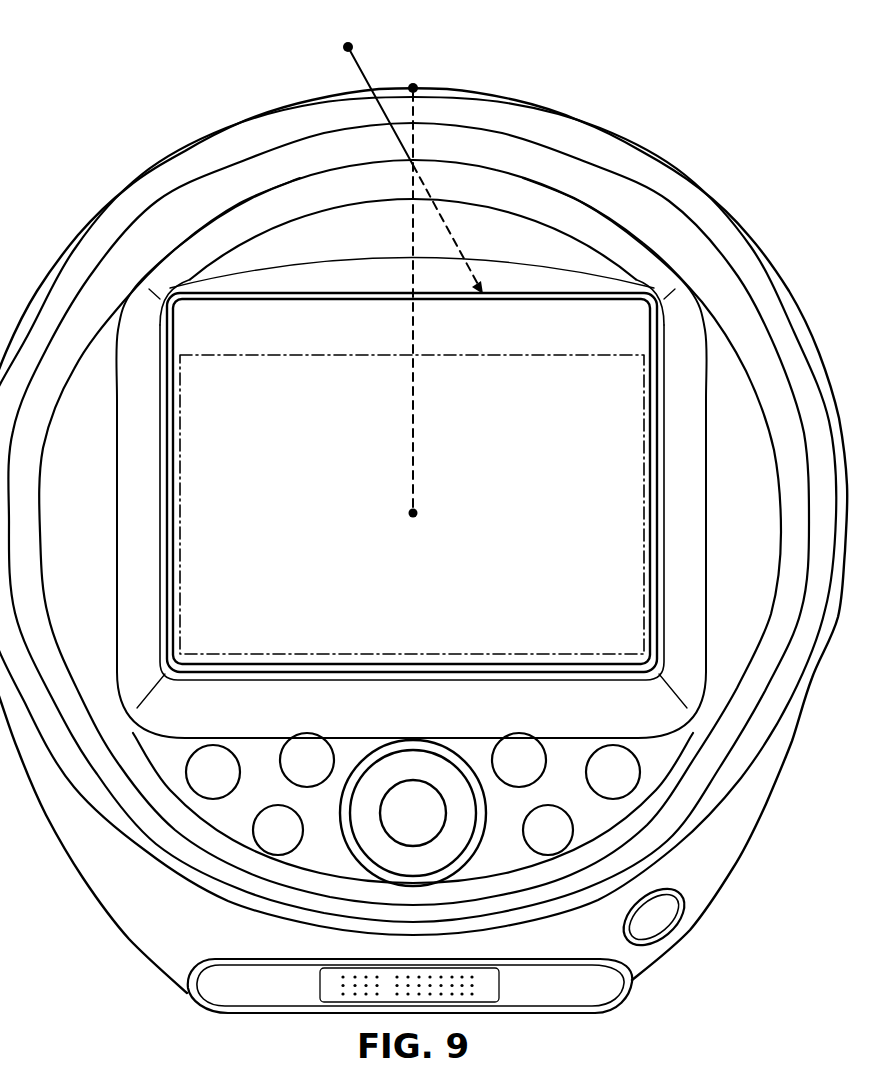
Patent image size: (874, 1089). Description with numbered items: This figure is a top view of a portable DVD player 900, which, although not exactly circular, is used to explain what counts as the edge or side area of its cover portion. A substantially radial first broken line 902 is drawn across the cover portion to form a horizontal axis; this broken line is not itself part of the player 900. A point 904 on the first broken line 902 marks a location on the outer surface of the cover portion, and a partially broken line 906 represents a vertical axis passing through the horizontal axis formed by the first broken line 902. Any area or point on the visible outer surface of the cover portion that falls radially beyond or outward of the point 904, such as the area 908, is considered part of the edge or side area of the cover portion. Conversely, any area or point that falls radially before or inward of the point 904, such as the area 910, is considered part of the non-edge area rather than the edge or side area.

The portable electronic device 900 is at (160, 71).
The center point of display 902 is at (418, 446).
The reference point on outer rim 904 is at (416, 89).
The viewing angle line 906 is at (404, 152).
The rotatable ring 908 is at (581, 172).
The inner ring rotation direction 910 is at (323, 210).